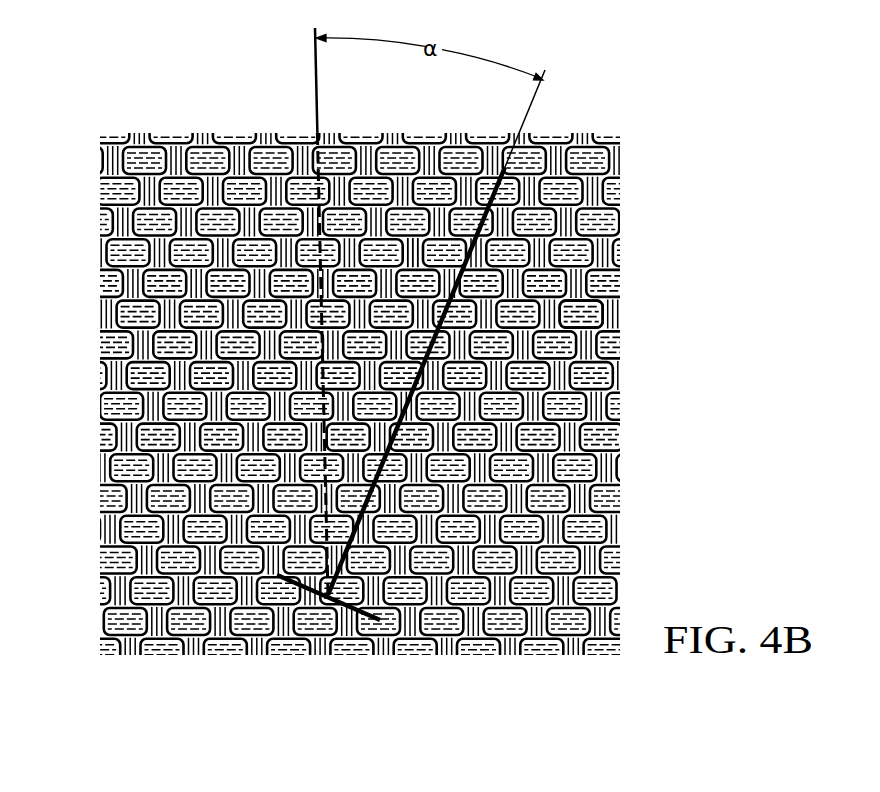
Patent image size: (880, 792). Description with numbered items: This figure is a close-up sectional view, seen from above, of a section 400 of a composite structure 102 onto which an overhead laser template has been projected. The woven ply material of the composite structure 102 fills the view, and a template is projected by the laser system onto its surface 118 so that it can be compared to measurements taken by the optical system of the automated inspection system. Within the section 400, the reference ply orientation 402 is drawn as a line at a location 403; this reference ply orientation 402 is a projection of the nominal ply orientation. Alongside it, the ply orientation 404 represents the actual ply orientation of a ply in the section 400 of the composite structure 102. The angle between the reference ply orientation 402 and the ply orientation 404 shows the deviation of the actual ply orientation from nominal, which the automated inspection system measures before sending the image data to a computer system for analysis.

The section 400 is at (96, 478).
The composite structure 102 is at (593, 312).
The location 403 is at (427, 257).
The ply orientation 404 is at (317, 160).
The reference ply orientation 402 is at (500, 197).
The surface 118 is at (350, 617).